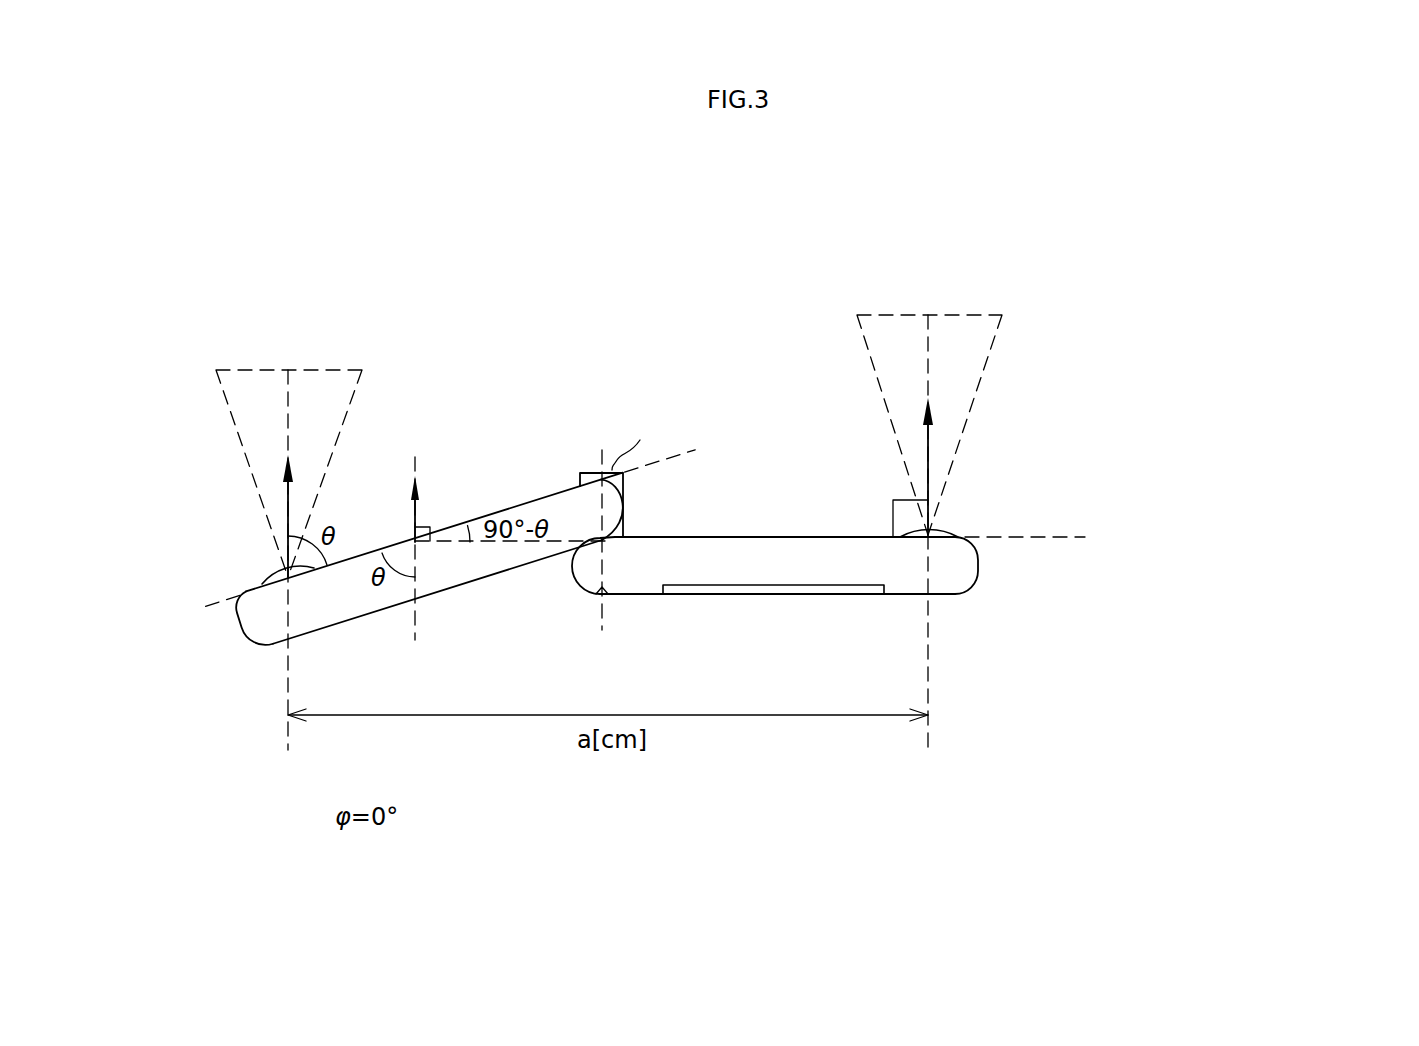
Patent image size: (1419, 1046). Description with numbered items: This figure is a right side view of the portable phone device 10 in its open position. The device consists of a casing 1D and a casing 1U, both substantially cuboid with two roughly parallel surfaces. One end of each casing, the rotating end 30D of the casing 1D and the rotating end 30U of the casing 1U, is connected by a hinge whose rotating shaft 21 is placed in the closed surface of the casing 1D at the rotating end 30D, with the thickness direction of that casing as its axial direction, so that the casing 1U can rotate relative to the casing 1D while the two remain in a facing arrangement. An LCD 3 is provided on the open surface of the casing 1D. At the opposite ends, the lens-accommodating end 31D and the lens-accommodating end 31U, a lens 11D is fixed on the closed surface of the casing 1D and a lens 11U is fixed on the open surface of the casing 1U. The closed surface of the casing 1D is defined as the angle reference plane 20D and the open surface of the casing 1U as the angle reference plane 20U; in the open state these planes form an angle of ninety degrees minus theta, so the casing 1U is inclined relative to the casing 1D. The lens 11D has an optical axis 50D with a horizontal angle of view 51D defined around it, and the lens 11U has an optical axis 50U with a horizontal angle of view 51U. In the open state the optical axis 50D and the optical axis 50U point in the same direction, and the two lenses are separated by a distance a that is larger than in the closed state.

The portable phone device 10 is at (1112, 470).
The casing 1U is at (323, 630).
The casing 1D is at (943, 597).
The LCD 3 is at (790, 597).
The lens 11U is at (288, 576).
The lens 11D is at (935, 535).
The angle reference plane 20U is at (697, 487).
The angle reference plane 20D is at (1030, 539).
The rotating shaft 21 is at (603, 612).
The rotating end 30U is at (585, 514).
The rotating end 30D is at (585, 576).
The lens-accommodating end 31U is at (257, 625).
The lens-accommodating end 31D is at (910, 588).
The optical axis 50U is at (292, 500).
The optical axis 50D is at (928, 463).
The horizontal angle of view 51U is at (345, 325).
The horizontal angle of view 51D is at (862, 340).